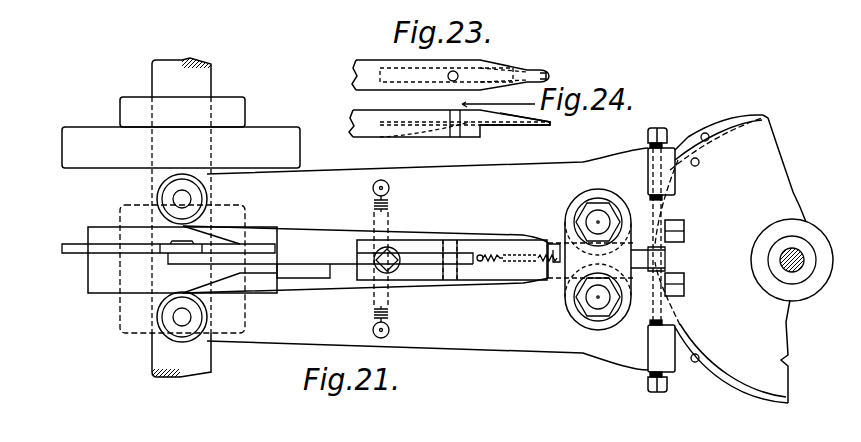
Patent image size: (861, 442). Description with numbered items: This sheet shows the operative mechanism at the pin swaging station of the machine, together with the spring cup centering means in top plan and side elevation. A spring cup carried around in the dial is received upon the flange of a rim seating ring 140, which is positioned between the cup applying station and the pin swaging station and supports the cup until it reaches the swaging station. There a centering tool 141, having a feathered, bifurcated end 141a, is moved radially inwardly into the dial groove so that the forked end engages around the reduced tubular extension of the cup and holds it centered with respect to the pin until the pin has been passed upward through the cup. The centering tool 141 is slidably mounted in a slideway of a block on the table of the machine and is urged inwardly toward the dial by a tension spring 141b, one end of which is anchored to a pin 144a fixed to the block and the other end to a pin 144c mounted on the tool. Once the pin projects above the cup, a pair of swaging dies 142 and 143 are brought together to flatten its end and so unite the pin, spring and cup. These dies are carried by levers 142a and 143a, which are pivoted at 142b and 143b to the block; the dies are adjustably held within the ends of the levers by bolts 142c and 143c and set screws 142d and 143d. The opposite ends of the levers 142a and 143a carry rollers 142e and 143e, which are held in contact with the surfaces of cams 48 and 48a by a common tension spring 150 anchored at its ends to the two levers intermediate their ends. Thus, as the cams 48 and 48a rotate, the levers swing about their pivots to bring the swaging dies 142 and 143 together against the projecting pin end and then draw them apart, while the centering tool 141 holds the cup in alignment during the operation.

In FIG. 21, the cam 48 is at (100, 226).
In FIG. 21, the cam 48a is at (107, 294).
In FIG. 21, the rim seating ring 140 is at (702, 126).
In FIG. 23, the centering tool 141 is at (367, 110).
In FIG. 24, the centering tool 141 is at (449, 123).
In FIG. 23, the feathered bifurcated end 141a is at (556, 60).
In FIG. 24, the feathered bifurcated end 141a is at (540, 126).
In FIG. 21, the tension spring 141b is at (495, 263).
In FIG. 21, the swaging die 142 is at (677, 238).
In FIG. 21, the lever 142a is at (415, 213).
In FIG. 21, the pivot 142b is at (598, 222).
In FIG. 21, the bolt 142c is at (683, 221).
In FIG. 21, the set screw 142d is at (680, 121).
In FIG. 21, the roller 142e is at (157, 199).
In FIG. 21, the swaging die 143 is at (676, 280).
In FIG. 21, the lever 143a is at (415, 324).
In FIG. 21, the pivot 143b is at (598, 297).
In FIG. 21, the bolt 143c is at (678, 297).
In FIG. 21, the set screw 143d is at (660, 393).
In FIG. 21, the roller 143e is at (162, 337).
In FIG. 21, the pin 144a is at (553, 243).
In FIG. 21, the pin 144c is at (480, 262).
In FIG. 21, the tension spring 150 is at (374, 209).